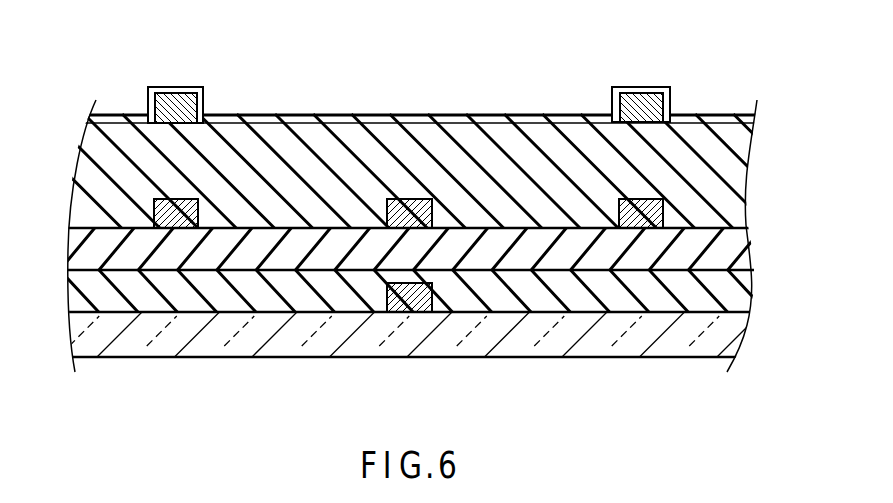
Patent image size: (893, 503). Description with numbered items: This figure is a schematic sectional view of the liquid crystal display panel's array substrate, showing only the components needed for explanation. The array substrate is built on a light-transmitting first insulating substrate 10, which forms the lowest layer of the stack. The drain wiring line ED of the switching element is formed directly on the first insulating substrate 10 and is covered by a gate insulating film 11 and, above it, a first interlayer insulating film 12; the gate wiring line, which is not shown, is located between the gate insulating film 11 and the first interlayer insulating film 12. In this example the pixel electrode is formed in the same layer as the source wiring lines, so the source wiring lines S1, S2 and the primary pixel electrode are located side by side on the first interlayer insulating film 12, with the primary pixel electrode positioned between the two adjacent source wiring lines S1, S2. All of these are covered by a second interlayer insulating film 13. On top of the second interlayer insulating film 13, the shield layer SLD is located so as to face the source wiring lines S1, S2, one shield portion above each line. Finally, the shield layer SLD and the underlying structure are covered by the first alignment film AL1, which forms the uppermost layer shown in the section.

The first insulating substrate 10 is at (87, 328).
The gate insulating film 11 is at (83, 287).
The first interlayer insulating film 12 is at (85, 245).
The second interlayer insulating film 13 is at (88, 150).
The first alignment film AL1 is at (370, 115).
The shield layer SLD is at (180, 87).
The source wiring line S1 is at (203, 203).
The source wiring line S2 is at (672, 203).
The drain wiring line ED is at (412, 302).